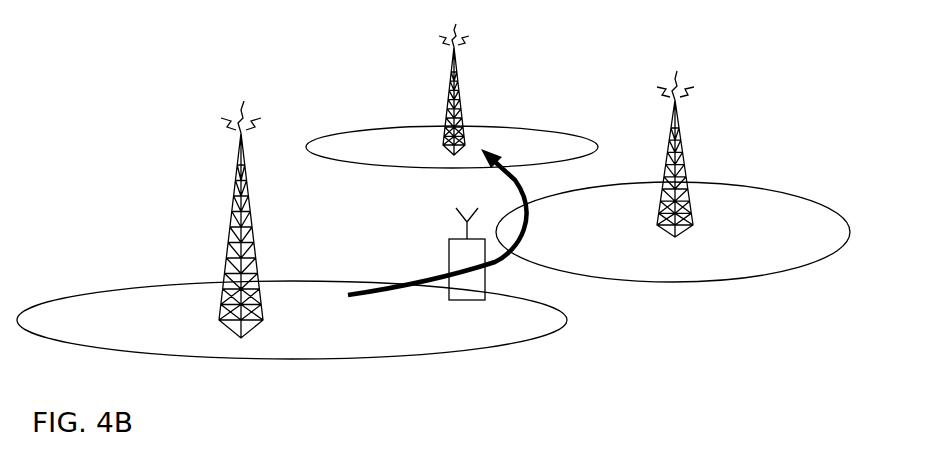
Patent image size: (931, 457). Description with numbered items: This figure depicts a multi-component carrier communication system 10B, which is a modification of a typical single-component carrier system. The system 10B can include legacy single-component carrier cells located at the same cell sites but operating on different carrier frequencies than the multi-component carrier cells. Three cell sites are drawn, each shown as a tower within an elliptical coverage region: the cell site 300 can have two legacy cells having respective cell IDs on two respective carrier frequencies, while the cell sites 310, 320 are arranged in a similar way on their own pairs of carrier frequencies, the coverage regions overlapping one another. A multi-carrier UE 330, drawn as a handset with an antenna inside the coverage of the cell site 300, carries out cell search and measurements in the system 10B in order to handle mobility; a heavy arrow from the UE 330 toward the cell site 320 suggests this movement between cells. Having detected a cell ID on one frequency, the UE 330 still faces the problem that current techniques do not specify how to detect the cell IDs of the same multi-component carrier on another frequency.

The multi-component carrier communication system 10B is at (100, 178).
The cell site 300 is at (132, 332).
The cell site 310 is at (607, 240).
The cell site 320 is at (409, 162).
The multi-carrier UE 330 is at (449, 250).